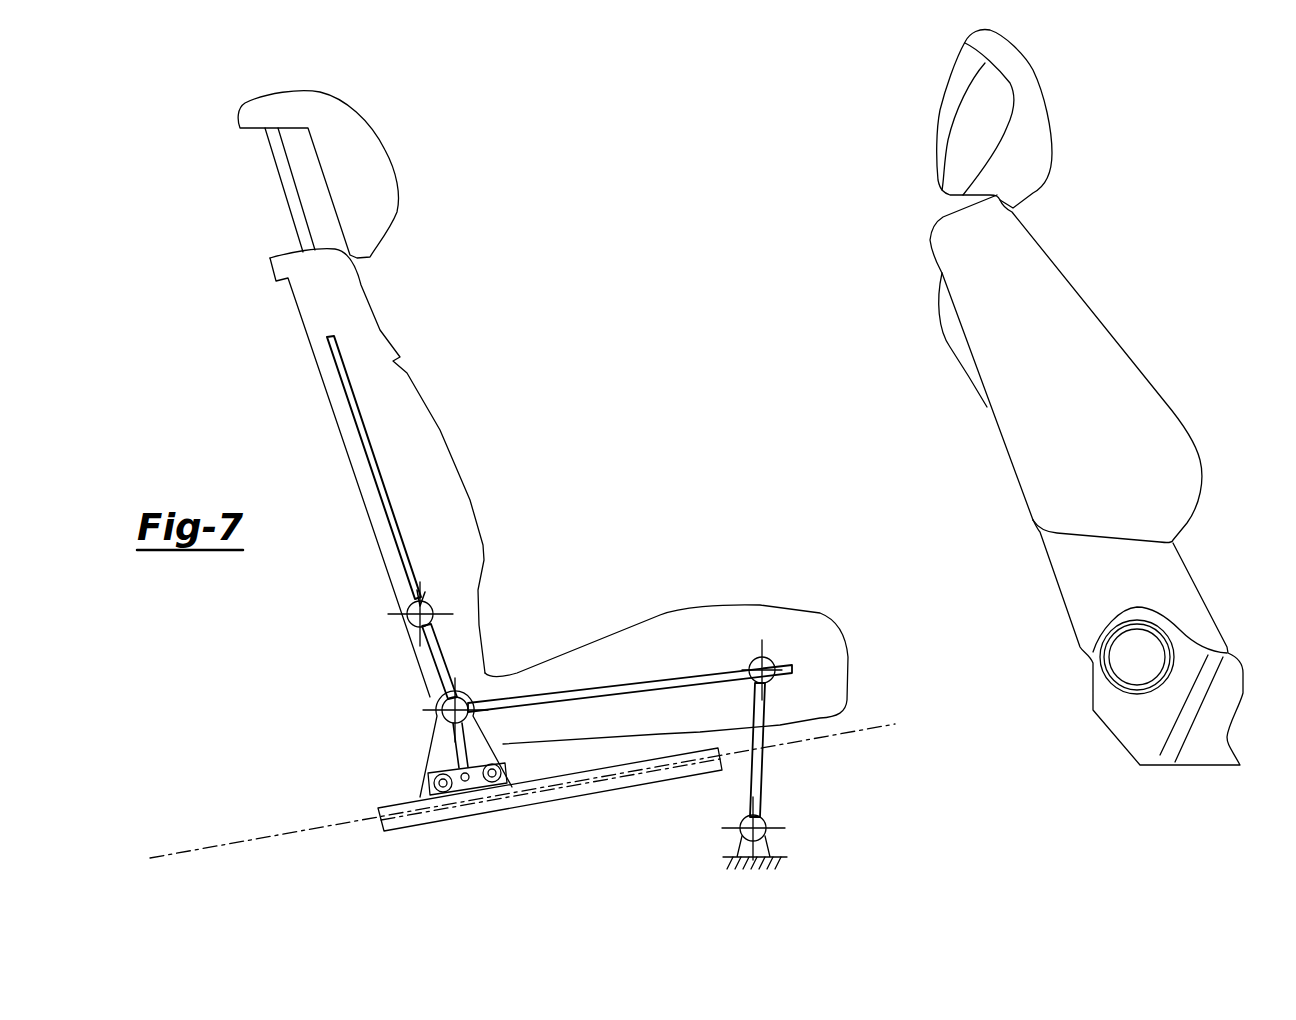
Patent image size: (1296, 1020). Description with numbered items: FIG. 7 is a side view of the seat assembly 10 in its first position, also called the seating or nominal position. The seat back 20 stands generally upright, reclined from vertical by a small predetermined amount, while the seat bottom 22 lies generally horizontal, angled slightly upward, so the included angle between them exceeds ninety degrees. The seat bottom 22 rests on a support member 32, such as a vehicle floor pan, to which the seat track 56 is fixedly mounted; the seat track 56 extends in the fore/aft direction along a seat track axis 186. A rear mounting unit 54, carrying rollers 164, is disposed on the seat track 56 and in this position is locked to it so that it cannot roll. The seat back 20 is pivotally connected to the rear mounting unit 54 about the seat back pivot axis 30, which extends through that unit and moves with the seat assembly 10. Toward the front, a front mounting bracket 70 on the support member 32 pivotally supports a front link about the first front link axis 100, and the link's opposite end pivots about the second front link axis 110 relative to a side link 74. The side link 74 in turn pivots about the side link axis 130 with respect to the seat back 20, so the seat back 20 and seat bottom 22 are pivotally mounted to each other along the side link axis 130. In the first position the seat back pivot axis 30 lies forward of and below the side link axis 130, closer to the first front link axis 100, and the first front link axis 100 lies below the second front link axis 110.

The seat assembly 10 is at (388, 311).
The seat back 20 is at (308, 337).
The seat bottom 22 is at (848, 658).
The seat back pivot axis 30 is at (432, 702).
The support member 32 is at (783, 852).
The rear mounting unit 54 is at (425, 760).
The seat track 56 is at (622, 793).
The front mounting bracket 70 is at (740, 850).
The side link 74 is at (673, 678).
The first front link axis 100 is at (770, 822).
The second front link axis 110 is at (755, 657).
The side link axis 130 is at (408, 607).
The rollers 164 is at (500, 787).
The seat track axis 186 is at (252, 838).